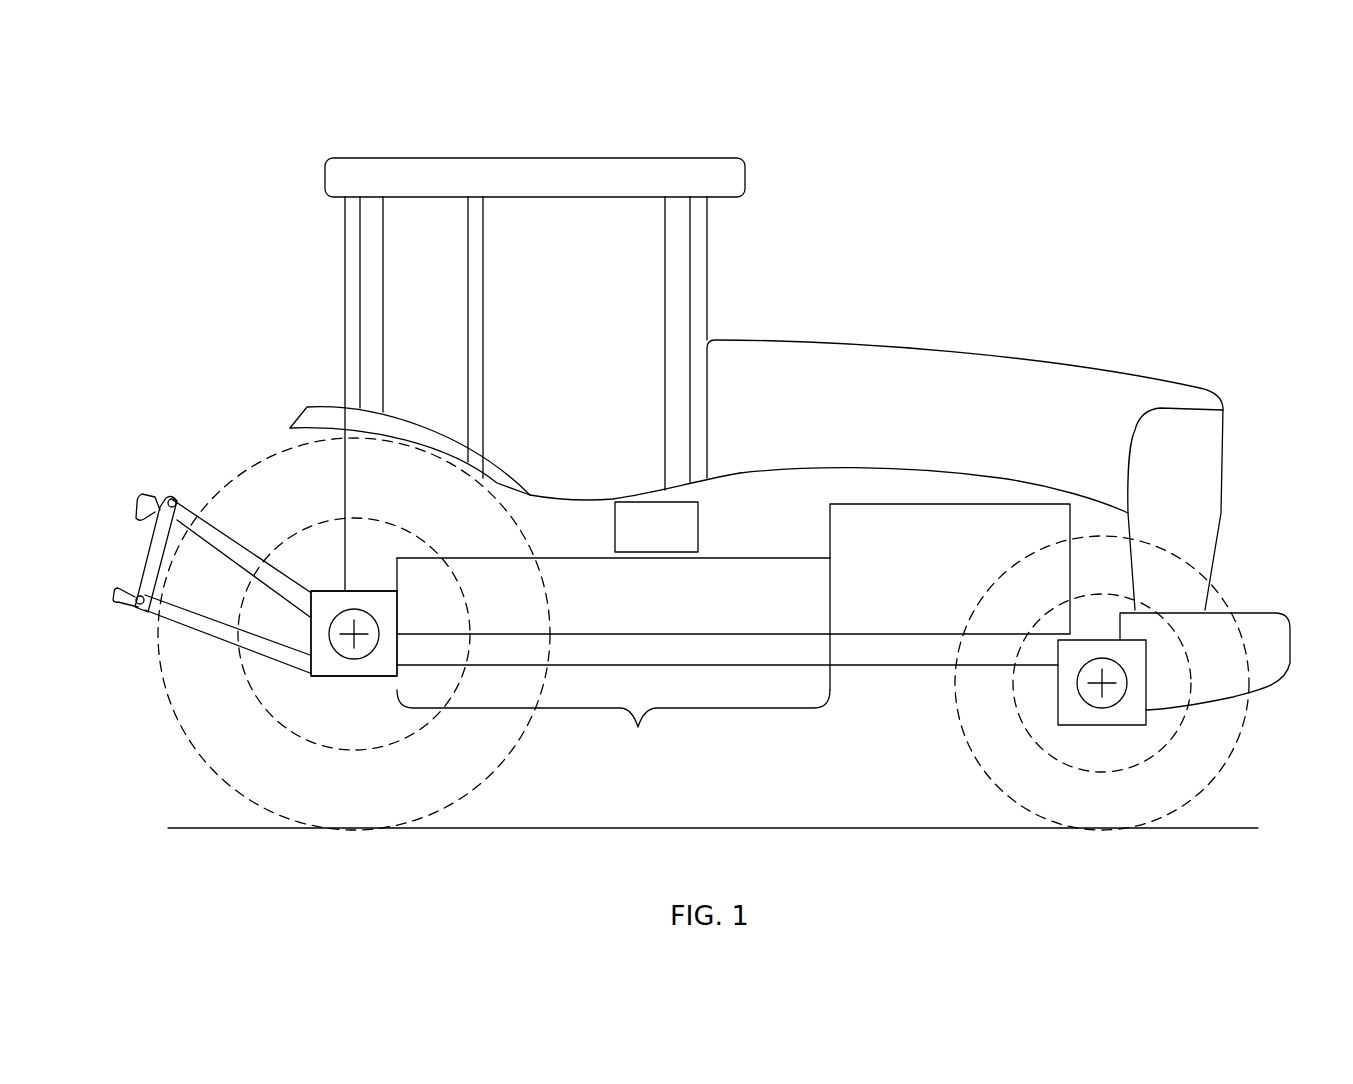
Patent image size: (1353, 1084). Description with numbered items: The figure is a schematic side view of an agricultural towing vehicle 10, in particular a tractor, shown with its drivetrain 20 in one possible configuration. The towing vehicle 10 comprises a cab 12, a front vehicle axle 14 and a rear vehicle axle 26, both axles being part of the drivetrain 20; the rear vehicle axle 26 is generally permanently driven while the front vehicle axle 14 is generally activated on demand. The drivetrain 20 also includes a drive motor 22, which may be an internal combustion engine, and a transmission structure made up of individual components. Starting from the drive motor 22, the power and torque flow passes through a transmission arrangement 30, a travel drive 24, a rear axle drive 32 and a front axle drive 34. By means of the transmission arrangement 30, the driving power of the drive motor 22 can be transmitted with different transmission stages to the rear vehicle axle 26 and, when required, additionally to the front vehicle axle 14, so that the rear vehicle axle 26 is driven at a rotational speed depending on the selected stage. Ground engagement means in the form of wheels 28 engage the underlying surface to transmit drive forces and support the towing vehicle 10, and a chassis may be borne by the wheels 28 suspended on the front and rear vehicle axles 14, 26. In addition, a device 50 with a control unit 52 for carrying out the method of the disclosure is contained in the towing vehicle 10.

The agricultural towing vehicle 10 is at (908, 127).
The cab 12 is at (567, 182).
The front vehicle axle 14 is at (1112, 686).
The drivetrain 20 is at (757, 450).
The drive motor 22 is at (946, 586).
The travel drive 24 is at (352, 668).
The rear vehicle axle 26 is at (350, 630).
The wheels 28 is at (413, 775).
The transmission arrangement 30 is at (727, 661).
The rear axle drive 32 is at (368, 601).
The front axle drive 34 is at (1091, 651).
The device 50 is at (605, 515).
The control unit 52 is at (674, 541).